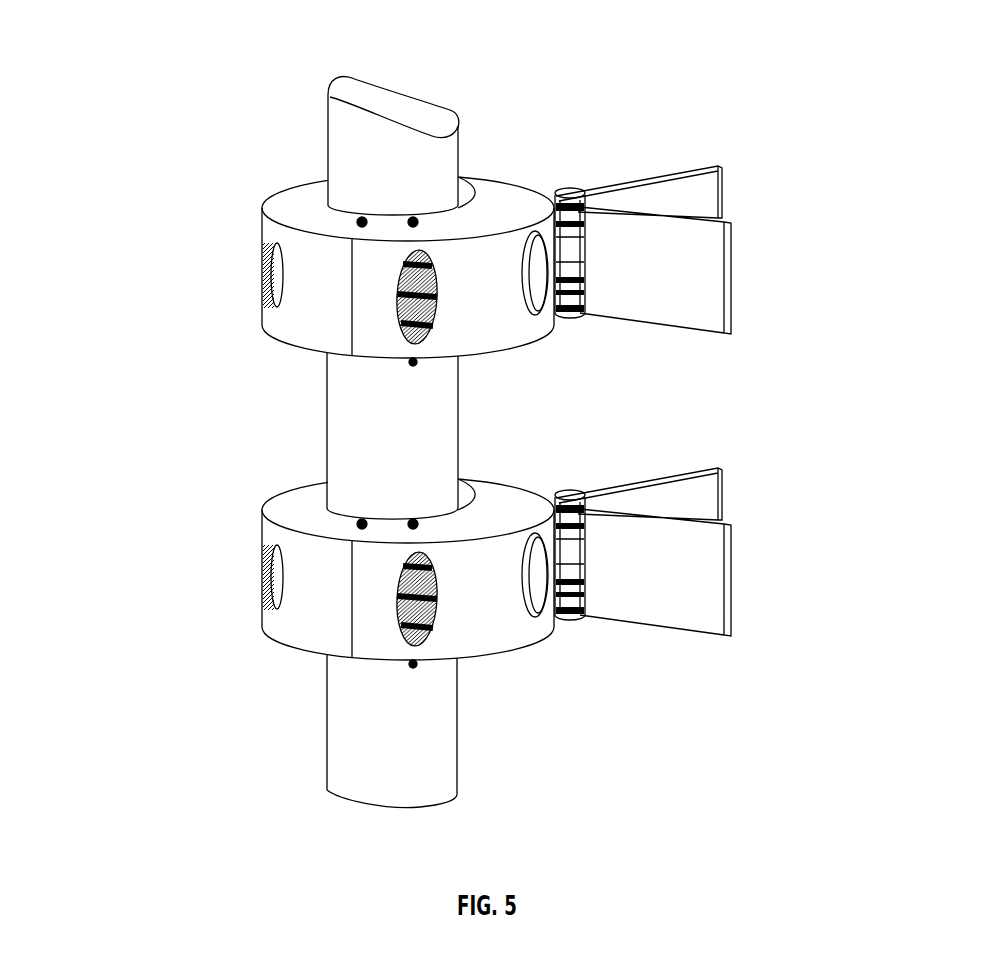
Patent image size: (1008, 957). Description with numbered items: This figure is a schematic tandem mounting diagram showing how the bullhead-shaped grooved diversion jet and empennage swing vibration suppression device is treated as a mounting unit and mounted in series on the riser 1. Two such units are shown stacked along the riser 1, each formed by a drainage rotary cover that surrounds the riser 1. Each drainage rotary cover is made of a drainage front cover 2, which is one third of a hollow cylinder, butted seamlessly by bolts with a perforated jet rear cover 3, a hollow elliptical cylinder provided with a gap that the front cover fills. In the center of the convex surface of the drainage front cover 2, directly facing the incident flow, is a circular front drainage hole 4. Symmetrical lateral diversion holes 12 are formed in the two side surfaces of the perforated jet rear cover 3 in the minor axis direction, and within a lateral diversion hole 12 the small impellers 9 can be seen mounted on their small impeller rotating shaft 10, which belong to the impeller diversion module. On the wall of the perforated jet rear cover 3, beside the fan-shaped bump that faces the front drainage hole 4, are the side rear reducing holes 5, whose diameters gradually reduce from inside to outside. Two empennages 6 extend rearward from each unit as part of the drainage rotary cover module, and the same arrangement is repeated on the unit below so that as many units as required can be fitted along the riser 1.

The riser 1 is at (440, 145).
The drainage front cover 2 is at (298, 208).
The perforated jet rear cover 3 is at (497, 185).
The front drainage hole 4 is at (260, 277).
The side rear reducing hole 5 is at (570, 317).
The empennage 6 is at (735, 282).
The small impeller 9 is at (435, 300).
The small impeller rotating shaft 10 is at (437, 327).
The lateral diversion hole 12 is at (417, 338).